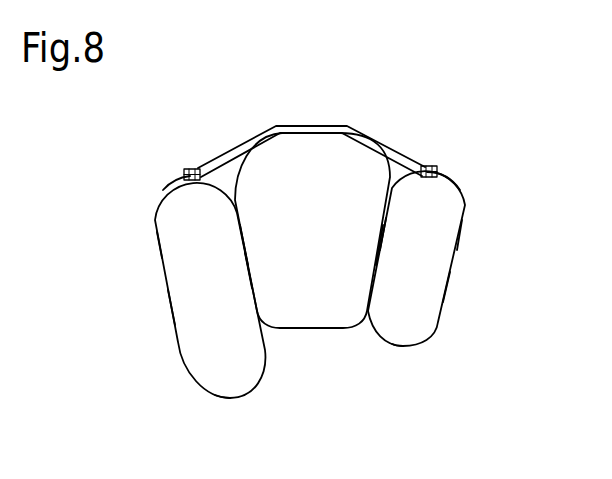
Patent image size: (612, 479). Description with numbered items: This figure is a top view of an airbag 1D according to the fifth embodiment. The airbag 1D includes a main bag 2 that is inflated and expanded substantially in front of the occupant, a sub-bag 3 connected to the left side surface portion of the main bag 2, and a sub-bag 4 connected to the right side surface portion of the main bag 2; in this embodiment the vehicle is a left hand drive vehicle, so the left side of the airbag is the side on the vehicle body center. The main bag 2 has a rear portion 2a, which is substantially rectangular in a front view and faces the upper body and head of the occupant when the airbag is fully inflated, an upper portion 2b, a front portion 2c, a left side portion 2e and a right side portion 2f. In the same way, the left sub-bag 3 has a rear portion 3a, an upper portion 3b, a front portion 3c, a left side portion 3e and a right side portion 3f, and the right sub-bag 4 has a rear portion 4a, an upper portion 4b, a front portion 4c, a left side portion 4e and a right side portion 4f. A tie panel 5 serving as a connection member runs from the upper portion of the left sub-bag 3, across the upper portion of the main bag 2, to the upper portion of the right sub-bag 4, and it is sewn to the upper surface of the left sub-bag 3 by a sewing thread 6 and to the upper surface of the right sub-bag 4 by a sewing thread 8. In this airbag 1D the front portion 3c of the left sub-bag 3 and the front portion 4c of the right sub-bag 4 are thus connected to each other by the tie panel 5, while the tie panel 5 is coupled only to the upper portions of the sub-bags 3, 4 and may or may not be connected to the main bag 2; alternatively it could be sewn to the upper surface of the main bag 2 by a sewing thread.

The airbag 1D is at (510, 194).
The main bag 2 is at (305, 345).
The rear portion 2a is at (319, 334).
The upper portion 2b is at (287, 333).
The front portion 2c is at (291, 126).
The left side portion 2e is at (243, 229).
The right side portion 2f is at (376, 275).
The sub-bag 3 is at (244, 405).
The rear portion 3a is at (230, 401).
The upper portion 3b is at (188, 308).
The front portion 3c is at (177, 181).
The left side portion 3e is at (160, 249).
The right side portion 3f is at (250, 279).
The sub-bag 4 is at (424, 355).
The rear portion 4a is at (402, 348).
The upper portion 4b is at (436, 295).
The front portion 4c is at (447, 174).
The left side portion 4e is at (386, 230).
The right side portion 4f is at (464, 244).
The tie panel 5 is at (389, 145).
The sewing thread 6 is at (192, 168).
The sewing thread 8 is at (424, 165).